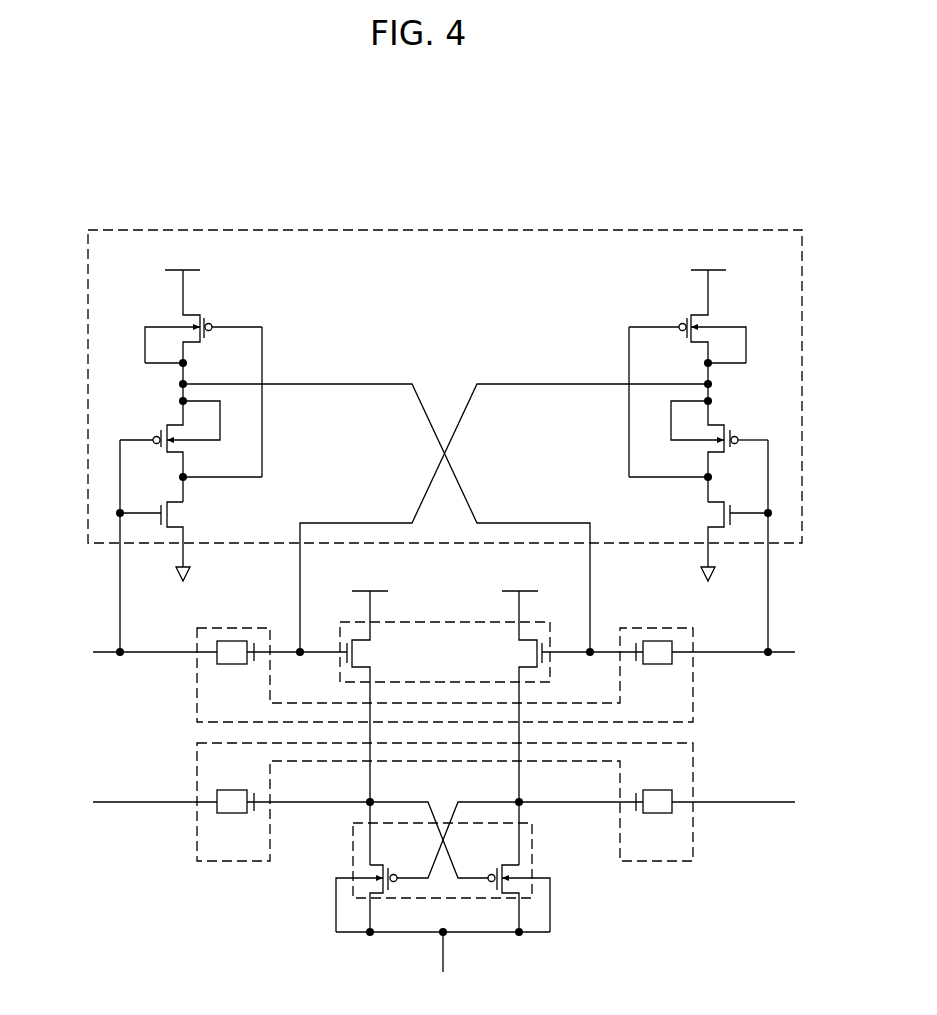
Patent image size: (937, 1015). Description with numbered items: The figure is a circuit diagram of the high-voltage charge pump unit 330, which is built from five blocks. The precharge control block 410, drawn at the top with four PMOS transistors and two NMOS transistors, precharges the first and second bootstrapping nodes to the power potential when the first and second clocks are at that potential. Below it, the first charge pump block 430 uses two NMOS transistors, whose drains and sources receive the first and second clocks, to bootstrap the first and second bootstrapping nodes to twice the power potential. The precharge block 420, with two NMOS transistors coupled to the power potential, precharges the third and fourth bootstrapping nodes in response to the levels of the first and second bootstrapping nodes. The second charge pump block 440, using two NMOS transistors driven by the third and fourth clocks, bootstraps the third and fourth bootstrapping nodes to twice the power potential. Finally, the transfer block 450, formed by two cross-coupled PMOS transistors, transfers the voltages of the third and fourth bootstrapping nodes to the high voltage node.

The high-voltage charge pump unit 330 is at (748, 157).
The precharge control block 410 is at (668, 230).
The precharge block 420 is at (420, 622).
The first charge pump block 430 is at (693, 697).
The second charge pump block 440 is at (693, 771).
The transfer block 450 is at (534, 860).